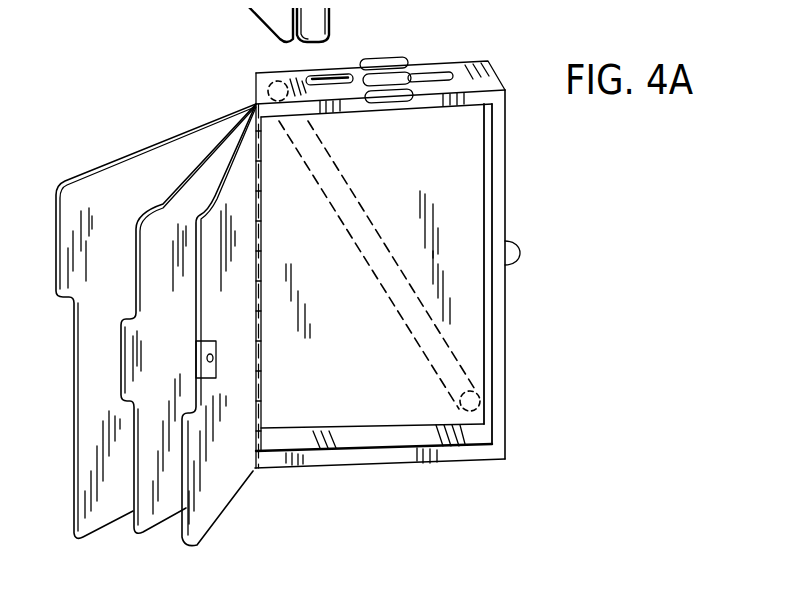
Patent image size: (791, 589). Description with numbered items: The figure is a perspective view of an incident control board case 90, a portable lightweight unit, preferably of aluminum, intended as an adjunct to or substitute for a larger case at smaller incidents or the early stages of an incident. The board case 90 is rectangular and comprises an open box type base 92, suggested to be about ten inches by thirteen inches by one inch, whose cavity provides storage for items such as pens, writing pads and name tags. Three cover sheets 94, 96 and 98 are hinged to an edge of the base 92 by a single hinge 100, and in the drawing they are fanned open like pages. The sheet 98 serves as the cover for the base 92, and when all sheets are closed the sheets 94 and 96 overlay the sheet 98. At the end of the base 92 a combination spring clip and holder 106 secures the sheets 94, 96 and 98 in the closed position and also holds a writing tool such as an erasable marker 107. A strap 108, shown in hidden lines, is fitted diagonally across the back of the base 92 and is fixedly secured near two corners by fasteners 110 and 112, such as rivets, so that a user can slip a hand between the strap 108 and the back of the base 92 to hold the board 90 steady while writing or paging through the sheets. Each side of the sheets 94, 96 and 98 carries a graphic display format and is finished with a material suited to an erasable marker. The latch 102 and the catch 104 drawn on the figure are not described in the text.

The incident control board case 90 is at (520, 318).
The open box type base 92 is at (497, 147).
The cover sheet 94 is at (78, 182).
The cover sheet 96 is at (158, 203).
The cover sheet 98 is at (210, 200).
The hinge 100 is at (258, 157).
The latch 102 is at (213, 371).
The catch bump 104 is at (518, 263).
The combination spring clip and holder 106 is at (390, 58).
The erasable marker 107 is at (443, 72).
The strap 108 is at (367, 213).
The fastener 110 is at (262, 85).
The fastener 112 is at (480, 391).